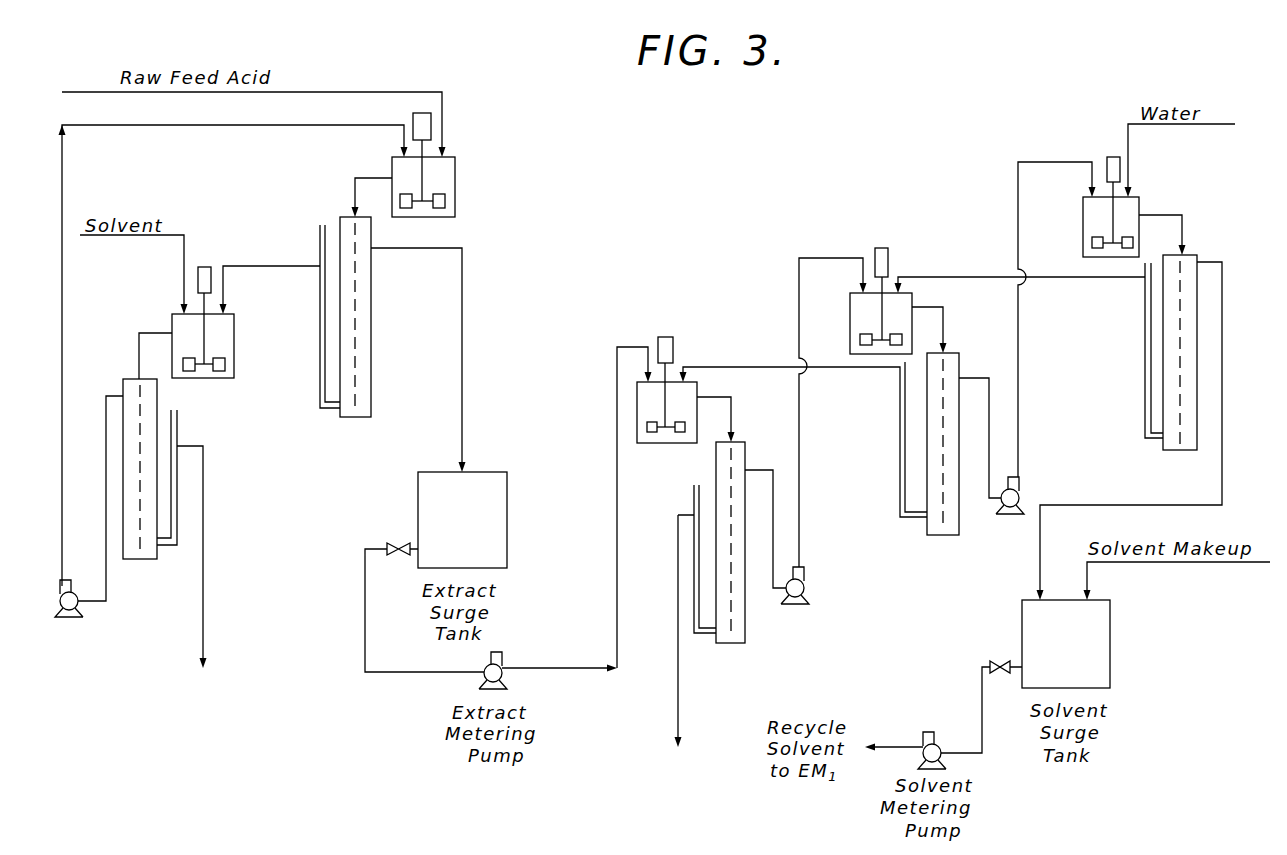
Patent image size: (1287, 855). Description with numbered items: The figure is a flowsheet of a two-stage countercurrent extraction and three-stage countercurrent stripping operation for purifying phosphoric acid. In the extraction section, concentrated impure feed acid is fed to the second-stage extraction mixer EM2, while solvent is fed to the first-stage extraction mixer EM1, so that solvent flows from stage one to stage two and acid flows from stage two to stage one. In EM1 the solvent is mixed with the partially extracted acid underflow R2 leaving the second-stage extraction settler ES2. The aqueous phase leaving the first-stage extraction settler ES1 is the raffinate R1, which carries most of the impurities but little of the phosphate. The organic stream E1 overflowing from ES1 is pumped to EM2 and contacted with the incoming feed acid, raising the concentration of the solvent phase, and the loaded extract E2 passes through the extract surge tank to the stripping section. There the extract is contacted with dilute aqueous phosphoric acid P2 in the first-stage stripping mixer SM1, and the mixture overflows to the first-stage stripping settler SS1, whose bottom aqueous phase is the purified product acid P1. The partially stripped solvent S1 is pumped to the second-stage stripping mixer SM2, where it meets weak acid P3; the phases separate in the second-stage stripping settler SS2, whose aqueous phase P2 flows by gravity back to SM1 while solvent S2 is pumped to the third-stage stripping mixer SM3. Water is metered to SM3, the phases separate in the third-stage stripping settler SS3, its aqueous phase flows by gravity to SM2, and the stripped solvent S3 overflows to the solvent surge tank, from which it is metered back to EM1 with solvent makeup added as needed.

The first-stage extraction mixer EM1 is at (186, 338).
The first-stage extraction settler ES1 is at (150, 484).
The second-stage extraction mixer EM2 is at (430, 165).
The second-stage extraction settler ES2 is at (348, 334).
The first-stage stripping mixer SM1 is at (686, 405).
The first-stage stripping settler SS1 is at (751, 560).
The second-stage stripping mixer SM2 is at (876, 301).
The second-stage stripping settler SS2 is at (974, 460).
The third-stage stripping mixer SM3 is at (1110, 207).
The third-stage stripping settler SS3 is at (1171, 368).
The organic stream E1 is at (233, 344).
The P2O5-loaded extract E2 is at (459, 360).
The raffinate R1 is at (197, 585).
The partially extracted acid underflow R2 is at (270, 277).
The purified phosphoric acid product P1 is at (680, 670).
The dilute aqueous phosphoric acid P2 is at (804, 428).
The weak phosphoric acid P3 is at (1020, 272).
The partially stripped solvent phase S1 is at (833, 401).
The solvent phase S2 is at (1057, 308).
The stripped solvent S3 is at (1130, 431).